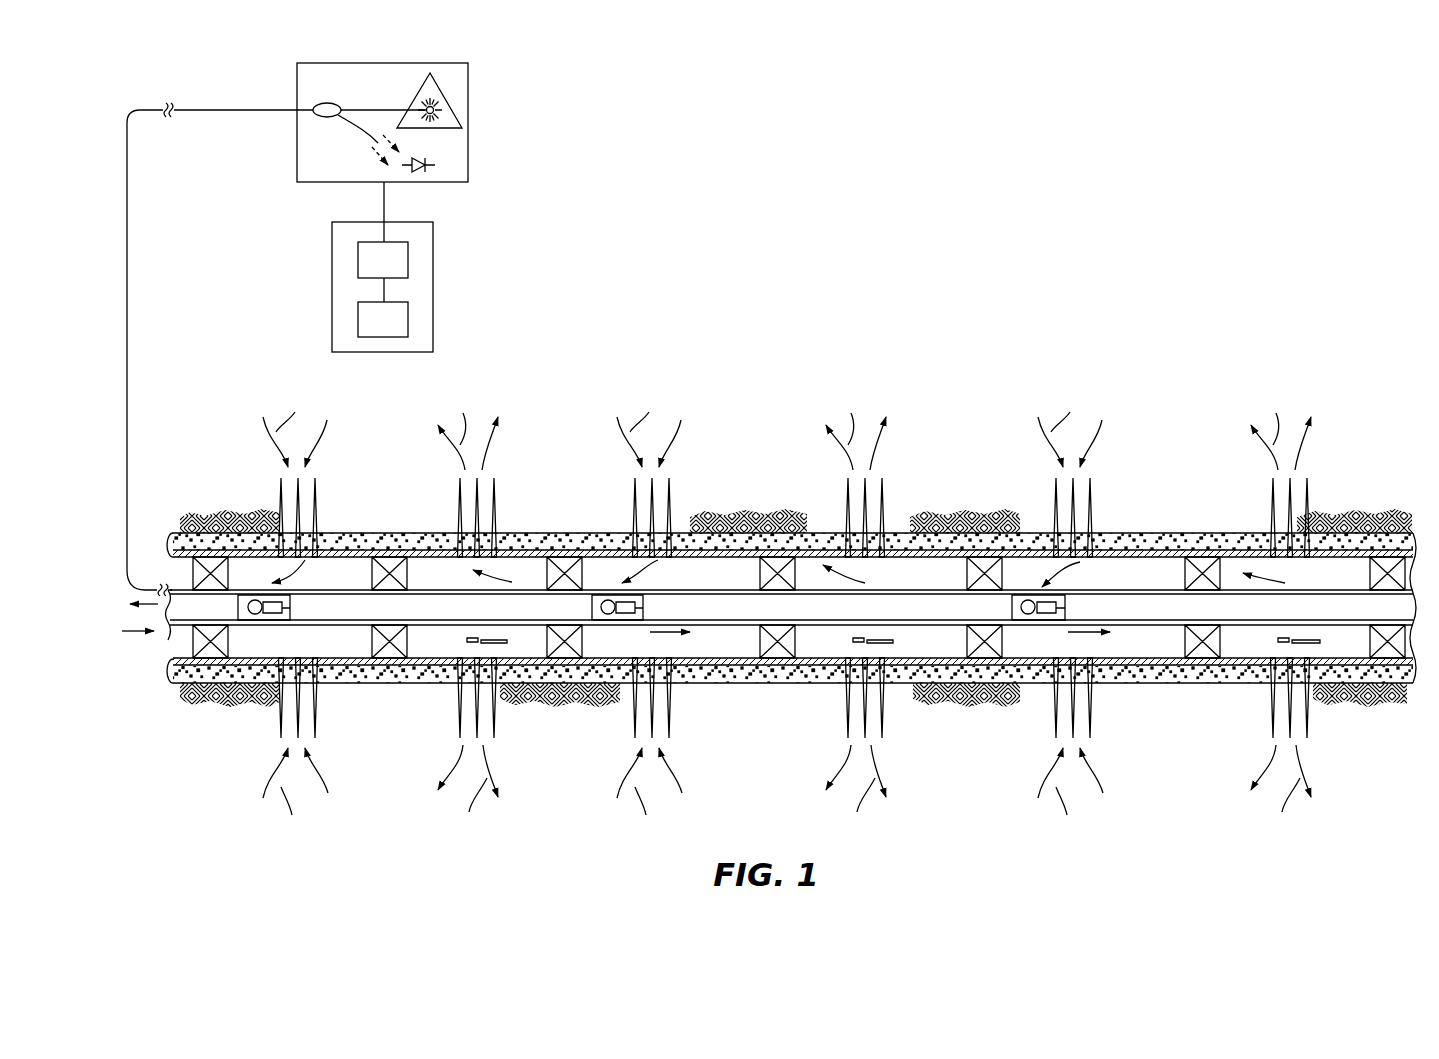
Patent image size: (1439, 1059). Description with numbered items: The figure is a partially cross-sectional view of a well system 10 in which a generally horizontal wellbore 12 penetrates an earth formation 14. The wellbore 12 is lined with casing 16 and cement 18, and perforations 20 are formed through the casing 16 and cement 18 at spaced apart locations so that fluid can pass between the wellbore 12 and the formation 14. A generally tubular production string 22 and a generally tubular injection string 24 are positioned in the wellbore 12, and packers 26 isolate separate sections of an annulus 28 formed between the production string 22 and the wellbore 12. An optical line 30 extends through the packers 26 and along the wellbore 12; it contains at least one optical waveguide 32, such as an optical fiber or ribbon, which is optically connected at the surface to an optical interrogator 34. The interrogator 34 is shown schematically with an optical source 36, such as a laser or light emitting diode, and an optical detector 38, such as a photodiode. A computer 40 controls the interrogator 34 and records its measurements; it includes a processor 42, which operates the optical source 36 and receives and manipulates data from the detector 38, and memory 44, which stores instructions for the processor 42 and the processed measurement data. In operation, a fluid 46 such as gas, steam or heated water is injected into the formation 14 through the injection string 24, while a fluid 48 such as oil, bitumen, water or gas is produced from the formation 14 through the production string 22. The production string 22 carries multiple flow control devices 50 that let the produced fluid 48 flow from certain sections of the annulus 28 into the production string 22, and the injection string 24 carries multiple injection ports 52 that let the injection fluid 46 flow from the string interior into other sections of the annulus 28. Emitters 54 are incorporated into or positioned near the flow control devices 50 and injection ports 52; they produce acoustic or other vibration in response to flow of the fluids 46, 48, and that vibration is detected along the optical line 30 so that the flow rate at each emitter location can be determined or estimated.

The well system 10 is at (1290, 218).
The wellbore 12 is at (1131, 565).
The earth formation 14 is at (768, 423).
The casing 16 is at (350, 683).
The cement 18 is at (578, 683).
The perforations 20 is at (317, 490).
The production string 22 is at (355, 587).
The injection string 24 is at (708, 642).
The packers 26 is at (200, 557).
The annulus 28 is at (1142, 648).
The optical line 30 is at (132, 378).
The optical waveguide 32 is at (198, 109).
The optical interrogator 34 is at (470, 62).
The optical source 36 is at (442, 89).
The optical detector 38 is at (437, 162).
The computer 40 is at (330, 267).
The processor 42 is at (410, 260).
The memory 44 is at (410, 318).
The fluid 46 is at (138, 688).
The fluid 48 is at (150, 592).
The flow control devices 50 is at (247, 595).
The injection ports 52 is at (467, 641).
The emitters 54 is at (290, 608).